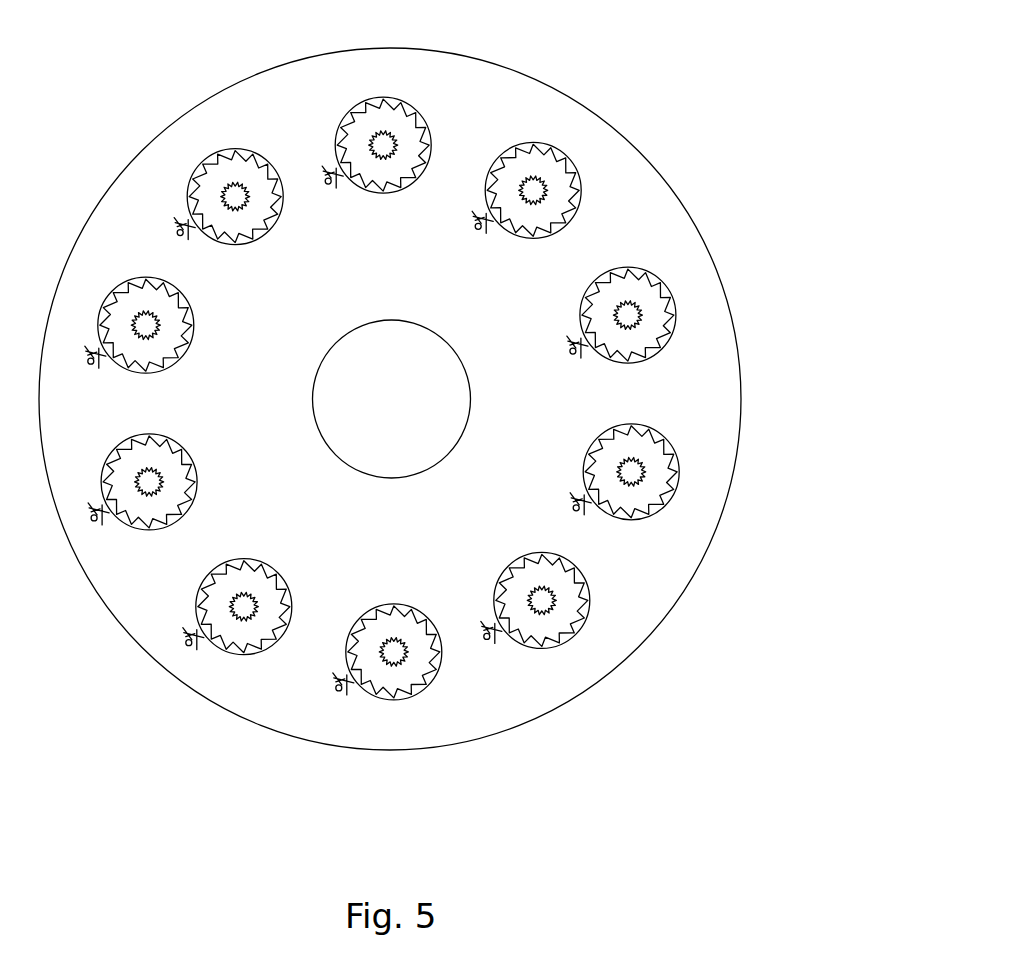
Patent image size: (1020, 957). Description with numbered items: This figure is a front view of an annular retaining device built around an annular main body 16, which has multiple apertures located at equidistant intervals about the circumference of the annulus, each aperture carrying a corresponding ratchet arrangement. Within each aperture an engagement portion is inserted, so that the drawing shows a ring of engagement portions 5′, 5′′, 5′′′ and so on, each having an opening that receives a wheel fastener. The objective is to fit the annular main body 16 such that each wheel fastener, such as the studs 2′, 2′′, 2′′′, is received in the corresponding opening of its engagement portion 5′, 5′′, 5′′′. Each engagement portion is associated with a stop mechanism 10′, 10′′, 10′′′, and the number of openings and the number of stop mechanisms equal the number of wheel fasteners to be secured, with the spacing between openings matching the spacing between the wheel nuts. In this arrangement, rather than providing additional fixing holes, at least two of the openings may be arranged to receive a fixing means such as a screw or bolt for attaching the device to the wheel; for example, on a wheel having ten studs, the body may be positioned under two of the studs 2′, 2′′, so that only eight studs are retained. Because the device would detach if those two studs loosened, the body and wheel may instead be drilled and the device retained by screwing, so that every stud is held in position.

The annular main body 16 is at (518, 97).
The stud 2′ is at (537, 187).
The engagement portion 5′ is at (567, 191).
The stop mechanism 10′ is at (493, 222).
The stud 2′′ is at (633, 316).
The engagement portion 5′′ is at (647, 298).
The stop mechanism 10′′ is at (588, 343).
The stud 2′′′ is at (637, 470).
The engagement portion 5′′′ is at (648, 493).
The stop mechanism 10′′′ is at (588, 500).